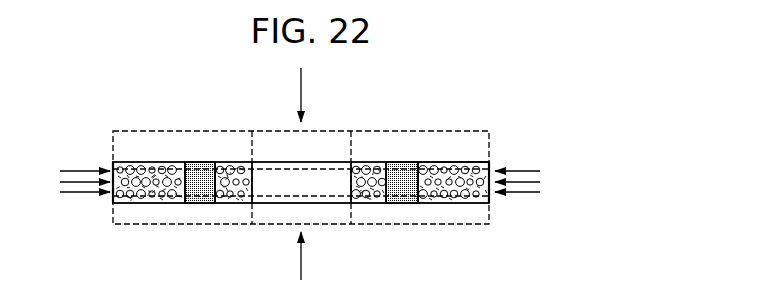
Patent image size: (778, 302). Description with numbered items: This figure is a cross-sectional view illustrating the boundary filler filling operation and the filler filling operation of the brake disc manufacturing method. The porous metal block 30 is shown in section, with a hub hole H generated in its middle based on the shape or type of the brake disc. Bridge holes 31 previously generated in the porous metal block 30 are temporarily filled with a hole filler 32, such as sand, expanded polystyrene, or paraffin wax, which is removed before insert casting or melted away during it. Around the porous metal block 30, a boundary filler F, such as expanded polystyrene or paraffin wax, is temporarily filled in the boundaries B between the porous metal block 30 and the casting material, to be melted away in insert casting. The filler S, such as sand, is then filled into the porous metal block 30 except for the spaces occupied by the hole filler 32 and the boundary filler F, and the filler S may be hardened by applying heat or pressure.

The porous metal block 30 is at (438, 198).
The bridge holes 31 is at (207, 170).
The hole filler 32 is at (201, 198).
The hub hole H is at (345, 185).
The boundaries B is at (437, 163).
The boundary filler F is at (463, 131).
The filler S is at (300, 174).